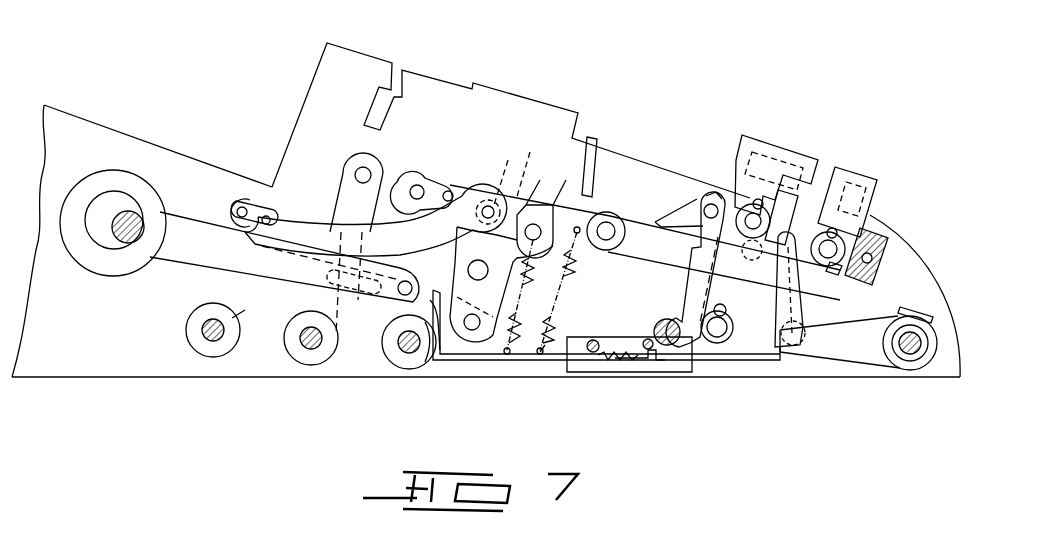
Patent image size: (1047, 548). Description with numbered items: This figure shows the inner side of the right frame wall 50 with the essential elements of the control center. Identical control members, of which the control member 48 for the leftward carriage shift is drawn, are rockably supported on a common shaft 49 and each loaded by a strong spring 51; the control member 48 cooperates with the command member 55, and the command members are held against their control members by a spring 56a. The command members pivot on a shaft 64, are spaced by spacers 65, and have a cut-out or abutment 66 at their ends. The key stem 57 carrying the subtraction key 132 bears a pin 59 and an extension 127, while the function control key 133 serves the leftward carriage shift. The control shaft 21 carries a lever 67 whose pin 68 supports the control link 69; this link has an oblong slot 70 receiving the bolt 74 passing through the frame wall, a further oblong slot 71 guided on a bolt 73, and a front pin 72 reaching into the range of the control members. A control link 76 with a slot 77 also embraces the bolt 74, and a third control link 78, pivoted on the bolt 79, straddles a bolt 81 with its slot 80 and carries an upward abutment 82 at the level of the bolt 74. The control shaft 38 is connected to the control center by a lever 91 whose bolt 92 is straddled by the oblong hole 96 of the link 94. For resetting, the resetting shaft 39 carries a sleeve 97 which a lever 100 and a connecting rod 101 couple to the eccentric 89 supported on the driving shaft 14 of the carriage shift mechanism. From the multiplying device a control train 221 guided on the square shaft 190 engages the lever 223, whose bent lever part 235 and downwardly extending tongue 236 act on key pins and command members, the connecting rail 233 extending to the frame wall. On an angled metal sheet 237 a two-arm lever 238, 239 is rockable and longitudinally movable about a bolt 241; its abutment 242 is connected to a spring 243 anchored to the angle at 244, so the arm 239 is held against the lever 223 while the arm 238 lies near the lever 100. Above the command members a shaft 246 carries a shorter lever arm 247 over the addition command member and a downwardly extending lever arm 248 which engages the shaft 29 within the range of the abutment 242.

The driving shaft 14 is at (124, 205).
The control shaft 21 is at (309, 350).
The shaft 29 is at (660, 320).
The control shaft 38 is at (208, 340).
The resetting shaft 39 is at (404, 352).
The control member 48 is at (497, 352).
The common shaft 49 is at (488, 272).
The right frame wall 50 is at (920, 288).
The spring 51 is at (522, 360).
The command member 55 is at (780, 360).
The spring 56a is at (545, 365).
The key stem 57 is at (735, 370).
The pin 59 is at (733, 330).
The shaft 64 is at (609, 222).
The spacers 65 is at (620, 225).
The cut-out or abutment 66 is at (538, 225).
The lever 67 is at (345, 195).
The pin 68 is at (362, 167).
The control link 69 is at (390, 160).
The oblong slot 70 is at (376, 220).
The oblong slot 71 is at (512, 169).
The pin 72 is at (585, 150).
The bolt 73 is at (545, 178).
The bolt 74 is at (417, 185).
The control link 76 is at (430, 180).
The slot 77 is at (448, 190).
The control link 78 is at (468, 355).
The bolt 79 is at (494, 355).
The slot 80 is at (352, 300).
The bolt 81 is at (334, 340).
The abutment 82 is at (488, 200).
The eccentric 89 is at (94, 197).
The lever 91 is at (212, 283).
The bolt 92 is at (243, 205).
The link 94 is at (255, 438).
The oblong hole 96 is at (268, 219).
The sleeve 97 is at (425, 365).
The lever 100 is at (436, 365).
The connecting rod 101 is at (244, 380).
The extension 127 is at (770, 215).
The subtraction key 132 is at (745, 140).
The function control key 133 is at (870, 205).
The square shaft 190 is at (920, 350).
The control train 221 is at (940, 318).
The lever 223 is at (870, 340).
The connecting rail 233 is at (880, 258).
The lever part 235 is at (790, 228).
The tongue 236 is at (800, 270).
The angled metal sheet 237 is at (595, 375).
The lever arm 238 is at (450, 372).
The lever arm 239 is at (702, 380).
The bolt 241 is at (635, 378).
The abutment 242 is at (660, 378).
The spring 243 is at (622, 355).
The attachment point 244 is at (592, 345).
The shaft 246 is at (712, 203).
The lever arm 247 is at (665, 225).
The lever arm 248 is at (696, 375).